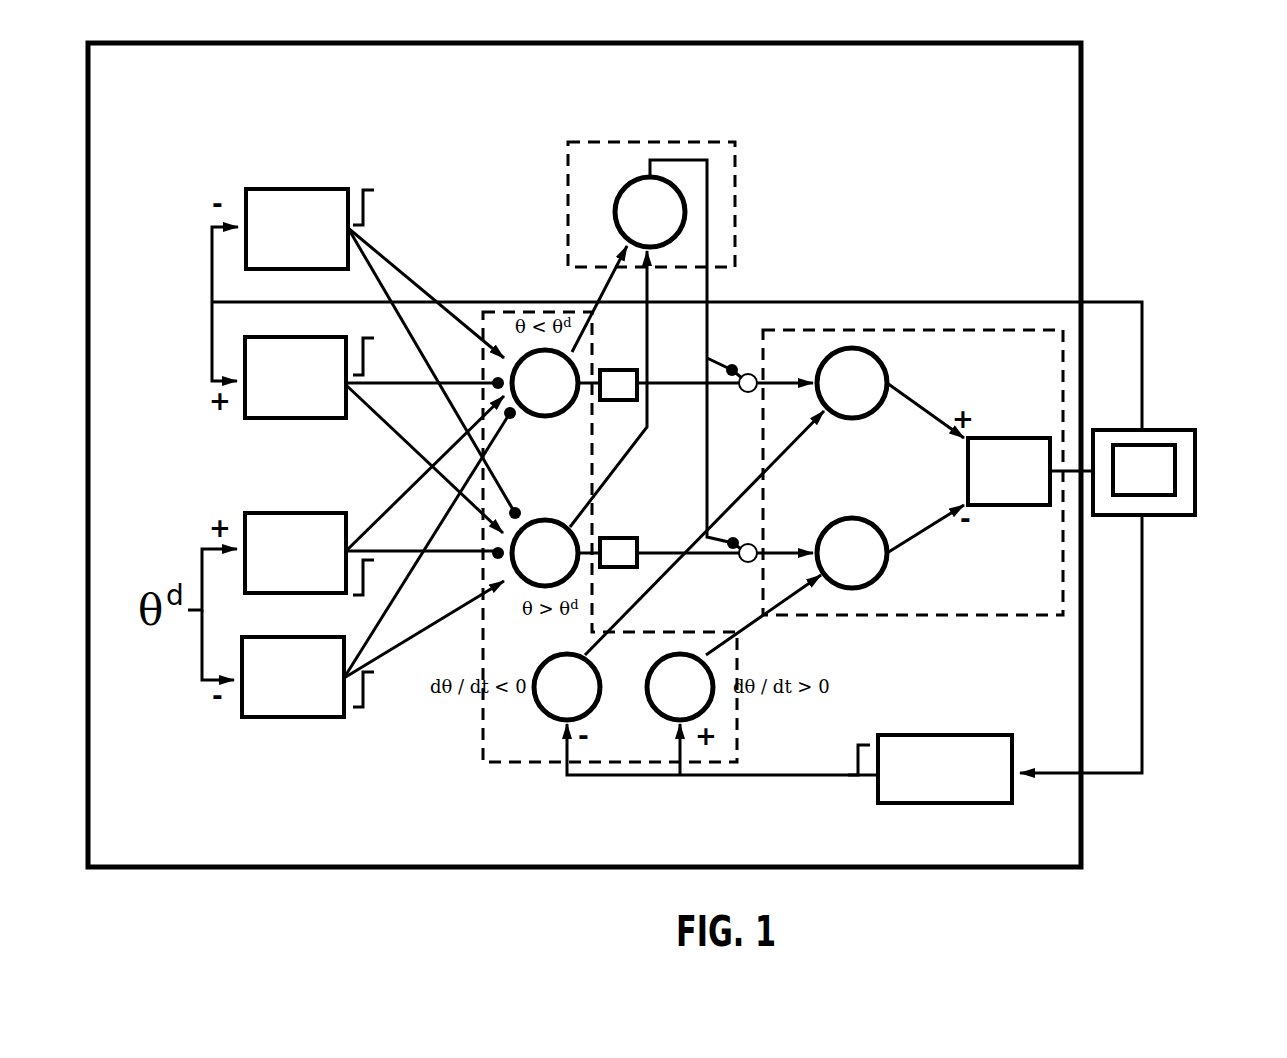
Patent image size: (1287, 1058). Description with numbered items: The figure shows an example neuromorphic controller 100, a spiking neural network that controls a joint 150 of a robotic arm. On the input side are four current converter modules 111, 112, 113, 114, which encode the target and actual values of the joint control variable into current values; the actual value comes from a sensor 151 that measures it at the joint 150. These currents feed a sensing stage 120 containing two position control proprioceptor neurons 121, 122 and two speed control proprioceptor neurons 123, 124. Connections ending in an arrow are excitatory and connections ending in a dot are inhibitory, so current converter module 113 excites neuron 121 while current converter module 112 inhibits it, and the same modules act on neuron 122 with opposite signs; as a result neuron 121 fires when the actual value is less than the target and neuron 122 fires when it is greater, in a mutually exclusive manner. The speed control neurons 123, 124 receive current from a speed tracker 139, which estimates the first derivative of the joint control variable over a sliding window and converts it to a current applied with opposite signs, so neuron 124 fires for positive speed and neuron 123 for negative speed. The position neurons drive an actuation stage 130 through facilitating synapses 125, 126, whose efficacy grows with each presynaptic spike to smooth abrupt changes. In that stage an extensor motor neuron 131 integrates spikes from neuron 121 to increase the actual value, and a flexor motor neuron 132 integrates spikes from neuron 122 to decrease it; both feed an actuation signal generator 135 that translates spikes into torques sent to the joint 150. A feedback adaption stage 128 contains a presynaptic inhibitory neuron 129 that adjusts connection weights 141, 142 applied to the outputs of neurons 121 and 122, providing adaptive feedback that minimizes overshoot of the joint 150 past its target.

The neuromorphic controller 100 is at (1082, 97).
The current converter module 111 is at (246, 190).
The current converter module 112 is at (245, 418).
The current converter module 113 is at (245, 513).
The current converter module 114 is at (242, 717).
The sensing stage 120 is at (542, 311).
The position control proprioceptor neuron 121 is at (517, 352).
The position control proprioceptor neuron 122 is at (514, 576).
The speed control proprioceptor neuron 123 is at (538, 722).
The speed control proprioceptor neuron 124 is at (653, 722).
The facilitating synapse 125 is at (630, 370).
The facilitating synapse 126 is at (628, 538).
The feedback adaption stage 128 is at (724, 142).
The presynaptic inhibitory neuron 129 is at (632, 185).
The actuation stage 130 is at (1000, 330).
The extensor motor neuron 131 is at (880, 360).
The flexor motor neuron 132 is at (847, 590).
The actuation signal generator 135 is at (1000, 438).
The speed tracker 139 is at (945, 803).
The connection weight 141 is at (760, 366).
The connection weight 142 is at (738, 565).
The joint 150 is at (1170, 430).
The sensor 151 is at (1175, 470).